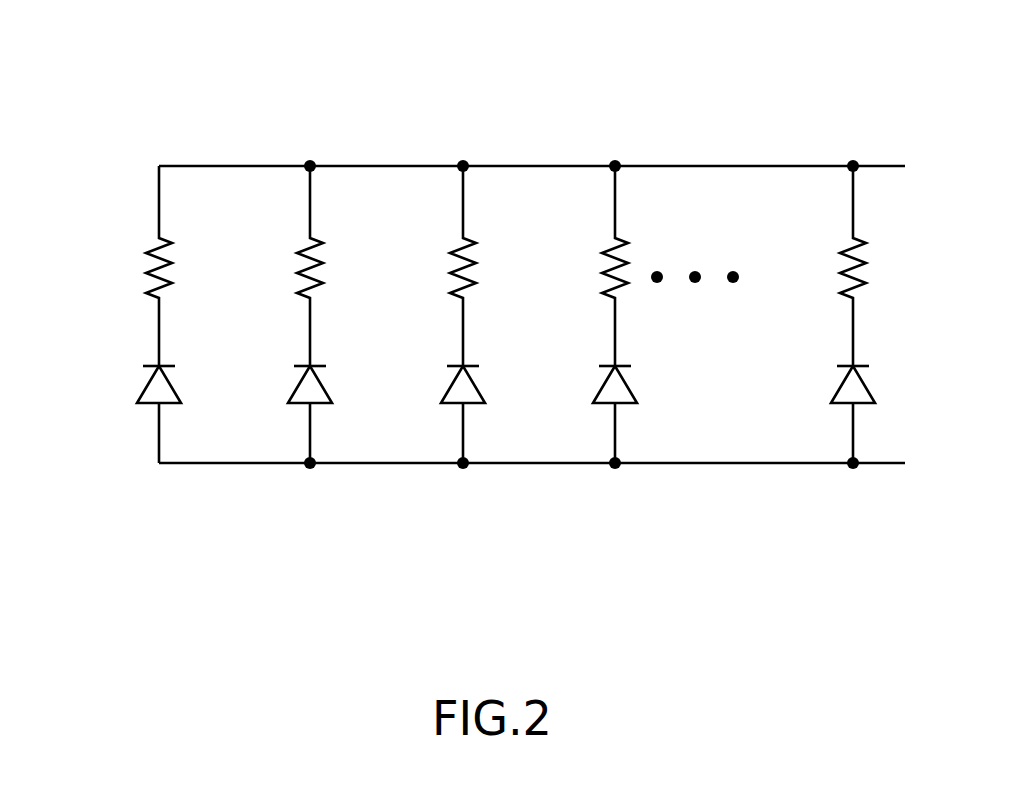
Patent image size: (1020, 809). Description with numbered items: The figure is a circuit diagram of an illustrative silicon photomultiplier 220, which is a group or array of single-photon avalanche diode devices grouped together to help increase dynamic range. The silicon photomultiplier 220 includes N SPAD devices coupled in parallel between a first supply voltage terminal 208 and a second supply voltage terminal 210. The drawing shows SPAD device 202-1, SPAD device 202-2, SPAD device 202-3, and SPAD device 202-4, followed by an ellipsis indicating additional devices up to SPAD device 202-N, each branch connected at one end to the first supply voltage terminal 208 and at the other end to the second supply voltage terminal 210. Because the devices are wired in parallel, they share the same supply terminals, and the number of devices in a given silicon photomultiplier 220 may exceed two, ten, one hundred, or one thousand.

The silicon photomultiplier 220 is at (129, 131).
The SPAD device 202-1 is at (115, 248).
The SPAD device 202-2 is at (261, 259).
The SPAD device 202-3 is at (417, 258).
The SPAD device 202-4 is at (568, 259).
The SPAD device 202-N is at (806, 257).
The first supply voltage terminal 208 is at (873, 165).
The second supply voltage terminal 210 is at (878, 464).